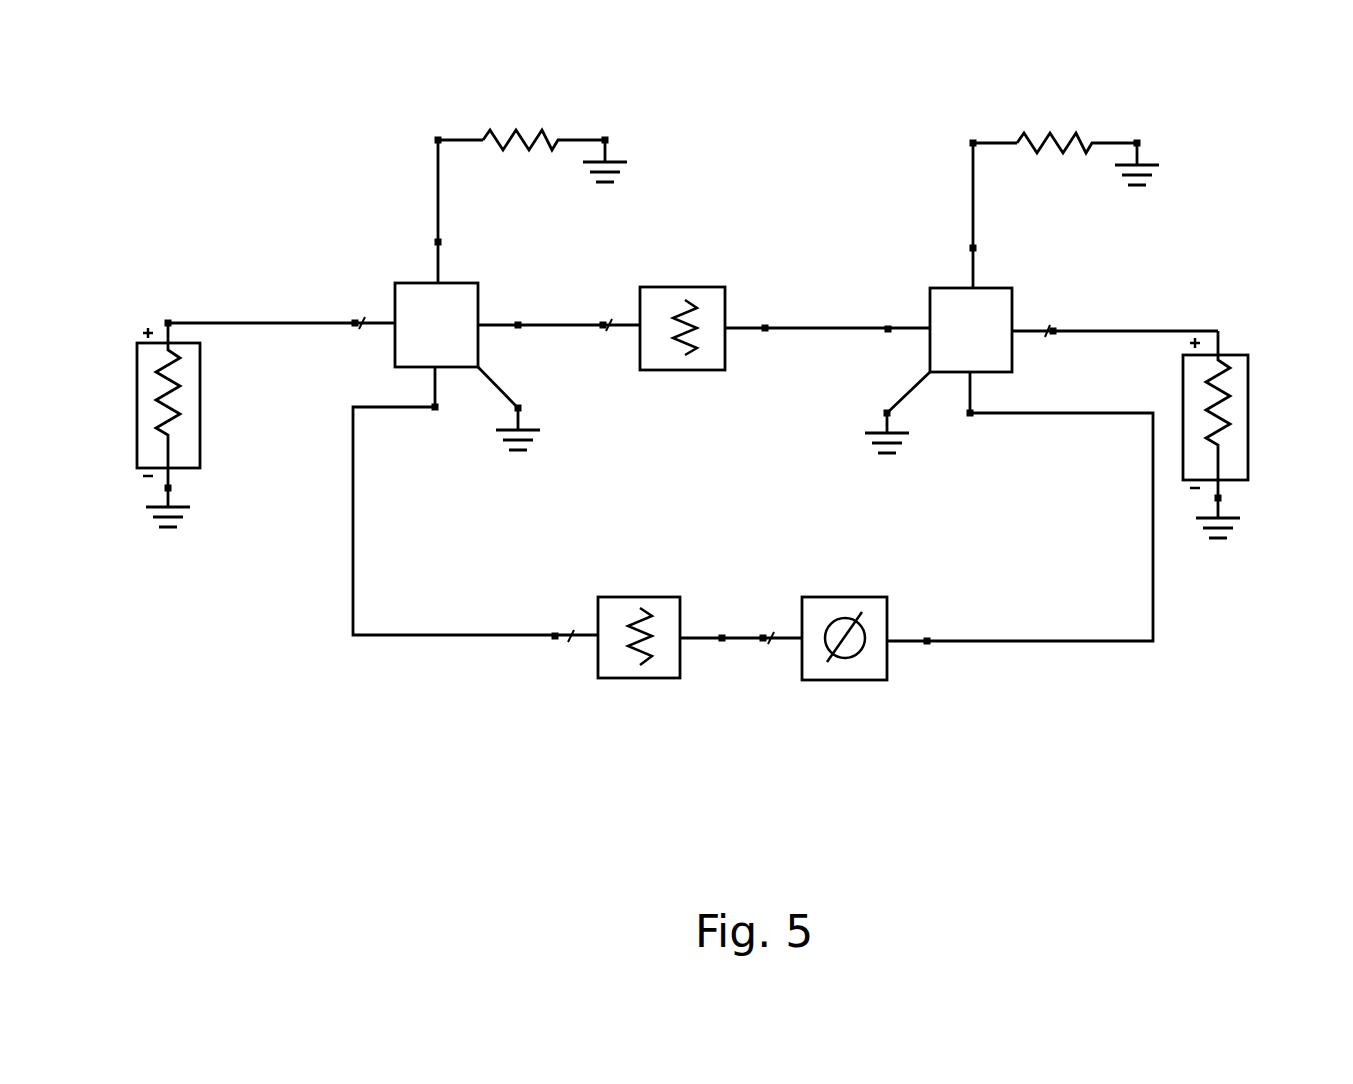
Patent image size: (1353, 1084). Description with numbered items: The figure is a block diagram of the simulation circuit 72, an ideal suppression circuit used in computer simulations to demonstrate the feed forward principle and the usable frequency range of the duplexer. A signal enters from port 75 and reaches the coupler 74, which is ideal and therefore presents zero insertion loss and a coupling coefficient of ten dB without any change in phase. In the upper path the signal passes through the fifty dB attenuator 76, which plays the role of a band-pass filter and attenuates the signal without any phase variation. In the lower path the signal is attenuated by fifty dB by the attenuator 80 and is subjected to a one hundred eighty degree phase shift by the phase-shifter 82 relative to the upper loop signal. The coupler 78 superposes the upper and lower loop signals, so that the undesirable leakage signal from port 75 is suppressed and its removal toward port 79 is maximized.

The simulation circuit 72 is at (744, 124).
The coupler 74 is at (396, 298).
The port 75 is at (166, 323).
The attenuator 76 is at (684, 286).
The coupler 78 is at (1014, 306).
The port 79 is at (1220, 332).
The attenuator 80 is at (598, 668).
The phase-shifter 82 is at (802, 668).